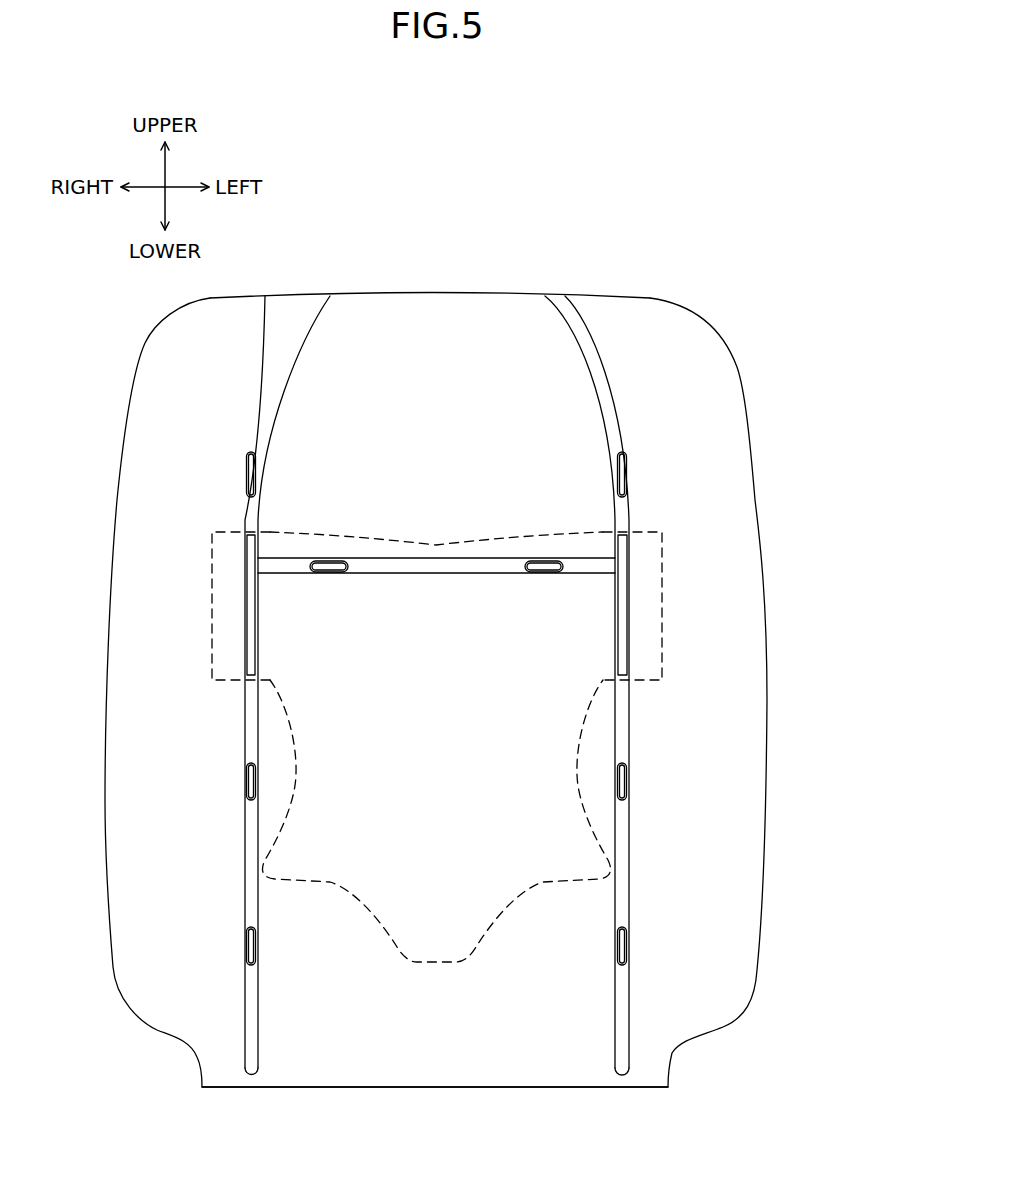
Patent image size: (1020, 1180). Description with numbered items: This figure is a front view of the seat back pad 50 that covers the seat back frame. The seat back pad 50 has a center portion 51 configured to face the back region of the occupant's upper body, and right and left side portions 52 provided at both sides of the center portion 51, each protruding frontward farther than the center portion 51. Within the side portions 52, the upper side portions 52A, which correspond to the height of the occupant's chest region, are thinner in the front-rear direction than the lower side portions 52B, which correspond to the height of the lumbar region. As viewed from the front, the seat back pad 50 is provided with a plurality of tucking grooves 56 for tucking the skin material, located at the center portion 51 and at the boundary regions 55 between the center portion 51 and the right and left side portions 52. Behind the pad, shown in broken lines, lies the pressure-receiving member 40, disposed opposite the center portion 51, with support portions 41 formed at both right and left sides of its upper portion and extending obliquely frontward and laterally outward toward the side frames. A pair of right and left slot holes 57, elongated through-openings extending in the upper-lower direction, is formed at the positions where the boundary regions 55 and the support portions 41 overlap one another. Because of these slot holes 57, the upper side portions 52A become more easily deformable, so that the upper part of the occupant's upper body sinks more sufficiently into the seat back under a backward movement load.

The seat back pad 50 is at (713, 222).
The center portion 51 is at (443, 294).
The right and left side portions 52 is at (267, 295).
The upper side portions 52A is at (228, 560).
The lower side portions 52B is at (228, 848).
The boundary regions 55 is at (248, 1076).
The tucking grooves 56 is at (258, 478).
The slot holes 57 is at (245, 640).
The pressure-receiving member 40 is at (435, 541).
The support portions 41 is at (210, 600).